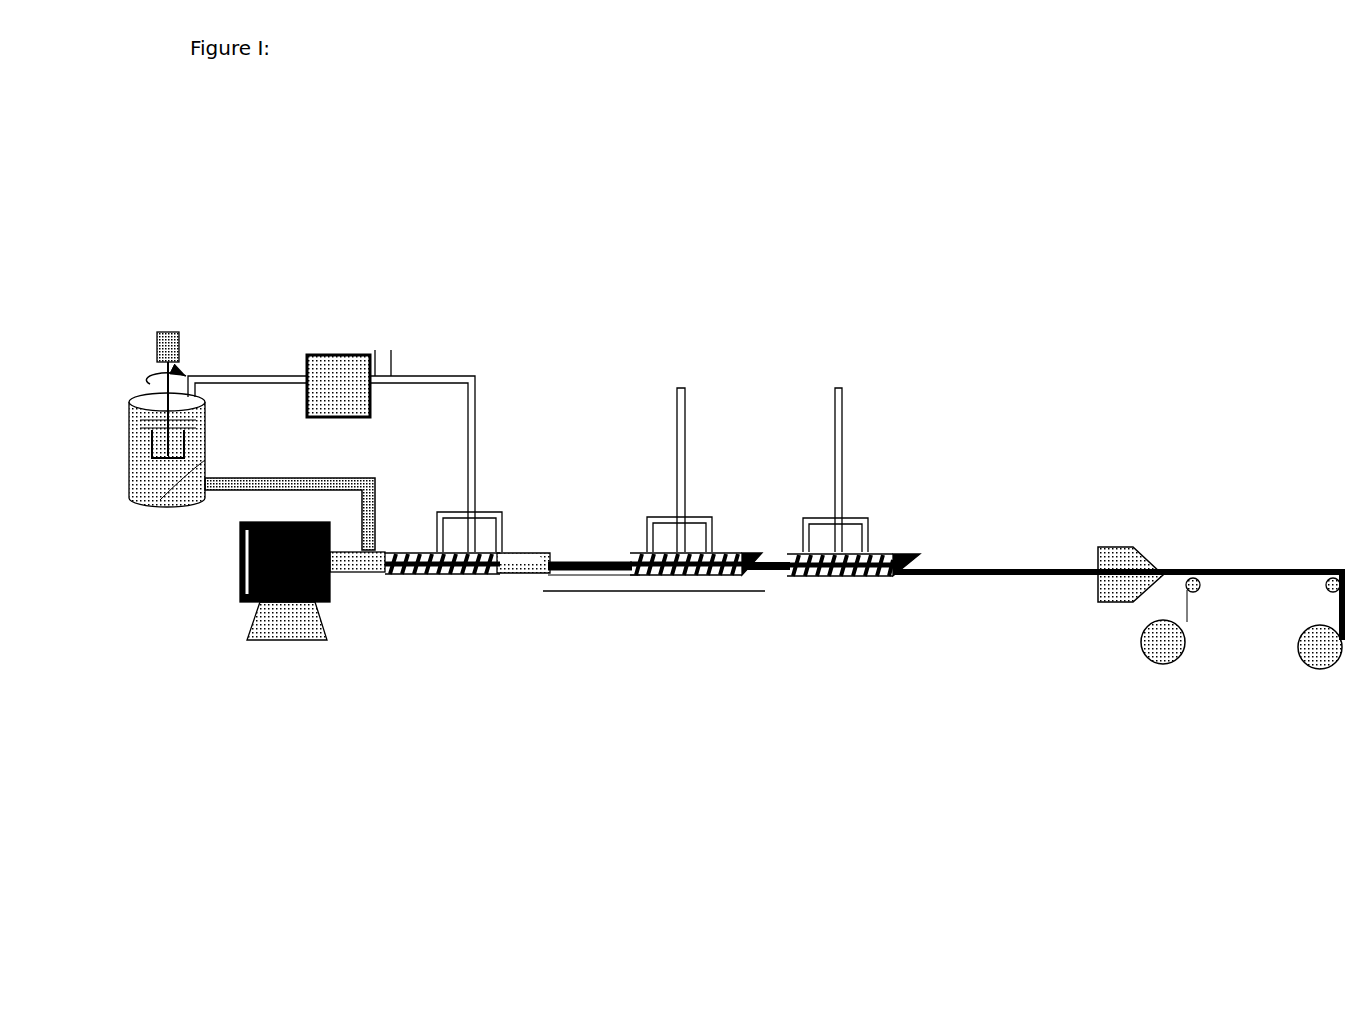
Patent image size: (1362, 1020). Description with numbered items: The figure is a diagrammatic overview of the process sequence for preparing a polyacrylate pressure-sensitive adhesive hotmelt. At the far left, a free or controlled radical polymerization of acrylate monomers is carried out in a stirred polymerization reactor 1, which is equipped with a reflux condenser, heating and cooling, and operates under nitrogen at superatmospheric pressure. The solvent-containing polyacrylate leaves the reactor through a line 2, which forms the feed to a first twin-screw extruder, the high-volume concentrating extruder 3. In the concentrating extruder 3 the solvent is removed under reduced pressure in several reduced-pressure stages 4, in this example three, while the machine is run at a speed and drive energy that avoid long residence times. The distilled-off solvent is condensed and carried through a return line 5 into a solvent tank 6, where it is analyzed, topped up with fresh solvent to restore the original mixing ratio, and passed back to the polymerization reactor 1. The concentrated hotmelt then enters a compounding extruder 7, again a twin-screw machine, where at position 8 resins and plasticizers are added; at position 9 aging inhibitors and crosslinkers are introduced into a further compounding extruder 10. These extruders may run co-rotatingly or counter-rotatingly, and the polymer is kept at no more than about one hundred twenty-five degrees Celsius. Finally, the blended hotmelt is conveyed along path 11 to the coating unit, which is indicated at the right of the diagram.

The polymerization reactor 1 is at (162, 512).
The line 2 is at (260, 460).
The concentrating extruder 3 is at (460, 588).
The reduced-pressure stages 4 is at (488, 538).
The return line 5 is at (490, 392).
The solvent tank 6 is at (334, 353).
The compounding extruder 7 is at (678, 593).
The addition of resins, plasticizers 8 is at (683, 376).
The addition of aging inhibitors, crosslinkers 9 is at (840, 376).
The compounding extruder 10 is at (847, 594).
The conveying of the acrylate hotmelt to the coating operation 11 is at (992, 544).